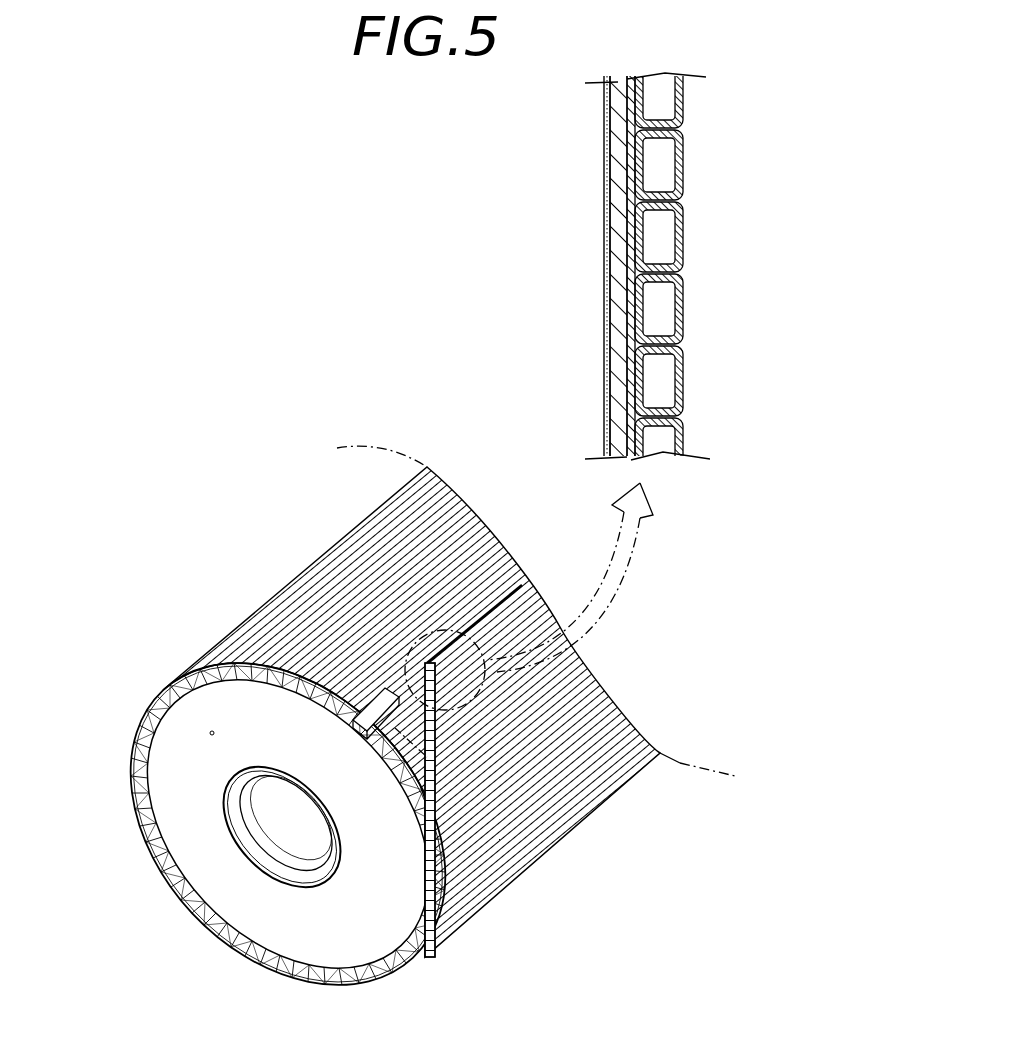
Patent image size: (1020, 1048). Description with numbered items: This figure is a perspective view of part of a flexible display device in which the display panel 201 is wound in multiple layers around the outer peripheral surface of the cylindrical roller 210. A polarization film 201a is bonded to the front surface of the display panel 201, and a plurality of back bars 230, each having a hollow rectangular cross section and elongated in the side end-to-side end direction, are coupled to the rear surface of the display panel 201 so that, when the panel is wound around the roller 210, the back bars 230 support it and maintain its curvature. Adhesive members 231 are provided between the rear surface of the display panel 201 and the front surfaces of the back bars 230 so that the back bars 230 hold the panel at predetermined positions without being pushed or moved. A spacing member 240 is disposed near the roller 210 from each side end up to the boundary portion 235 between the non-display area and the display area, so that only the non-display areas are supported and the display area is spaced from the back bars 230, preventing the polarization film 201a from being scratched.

The display panel 201 is at (609, 347).
The polarization film 201a is at (615, 333).
The roller 210 is at (222, 876).
The back bars 230 is at (407, 630).
The adhesive members 231 is at (630, 298).
The boundary portion 235 is at (392, 737).
The spacing member 240 is at (373, 703).